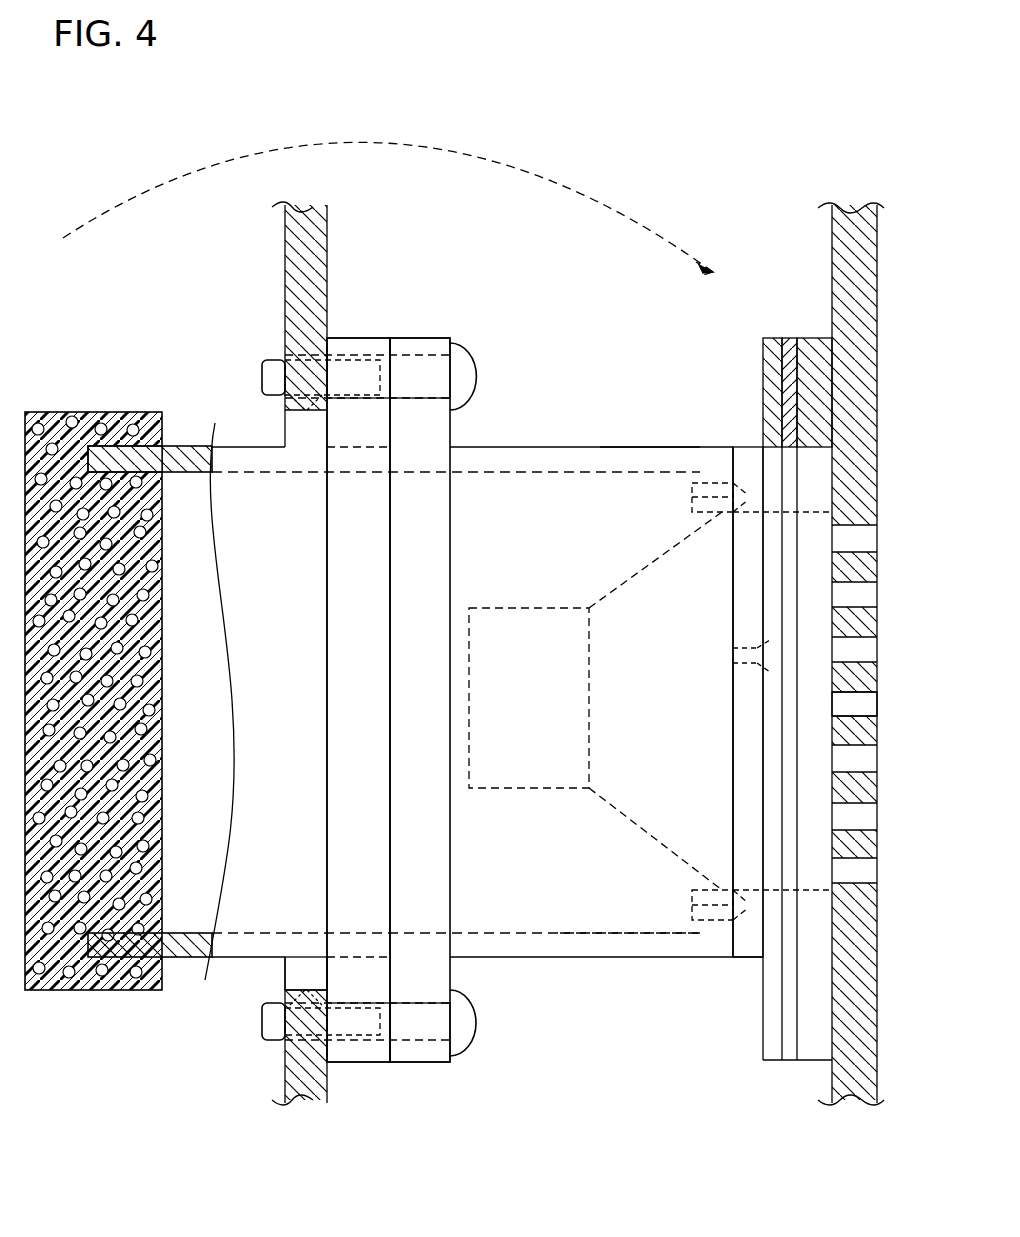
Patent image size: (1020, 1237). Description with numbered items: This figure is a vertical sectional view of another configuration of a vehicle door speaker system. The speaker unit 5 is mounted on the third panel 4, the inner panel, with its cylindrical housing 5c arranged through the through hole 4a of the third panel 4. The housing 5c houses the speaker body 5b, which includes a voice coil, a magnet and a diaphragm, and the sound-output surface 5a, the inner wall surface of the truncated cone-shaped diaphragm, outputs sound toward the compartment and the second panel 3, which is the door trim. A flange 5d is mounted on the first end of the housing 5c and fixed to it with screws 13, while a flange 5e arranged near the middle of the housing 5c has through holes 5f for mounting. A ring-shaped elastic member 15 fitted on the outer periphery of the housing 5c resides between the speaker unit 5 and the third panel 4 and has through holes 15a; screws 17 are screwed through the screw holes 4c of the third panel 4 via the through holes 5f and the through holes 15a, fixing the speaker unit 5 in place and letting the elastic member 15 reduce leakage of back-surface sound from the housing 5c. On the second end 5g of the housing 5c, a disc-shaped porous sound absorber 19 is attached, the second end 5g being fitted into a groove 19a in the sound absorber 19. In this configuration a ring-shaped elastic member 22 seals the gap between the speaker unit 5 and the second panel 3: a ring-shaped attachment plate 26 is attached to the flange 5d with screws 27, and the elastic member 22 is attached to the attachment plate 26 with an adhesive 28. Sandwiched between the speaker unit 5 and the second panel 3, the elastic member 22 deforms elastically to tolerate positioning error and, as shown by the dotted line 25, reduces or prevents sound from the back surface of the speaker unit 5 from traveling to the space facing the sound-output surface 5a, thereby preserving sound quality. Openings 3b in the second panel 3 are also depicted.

The second panel 3 is at (877, 262).
The wall opening 3b is at (877, 705).
The third panel 4 is at (286, 290).
The through hole 4a is at (290, 965).
The screw holes 4c is at (290, 408).
The speaker unit 5 is at (560, 957).
The sound-output surface 5a is at (648, 446).
The speaker body 5b is at (587, 606).
The cylindrical housing 5c is at (612, 935).
The flange 5d is at (745, 957).
The flange 5e is at (440, 555).
The through holes 5f is at (428, 345).
The second end 5g is at (214, 425).
The screws 13 is at (706, 480).
The elastic member 15 is at (358, 572).
The through holes 15a is at (358, 340).
The screws 17 is at (473, 362).
The sound absorber 19 is at (100, 992).
The groove 19a is at (88, 412).
The elastic member 22 is at (820, 380).
The dotted line 25 is at (490, 160).
The attachment plate 26 is at (762, 350).
The screws 27 is at (735, 655).
The adhesive 28 is at (784, 340).